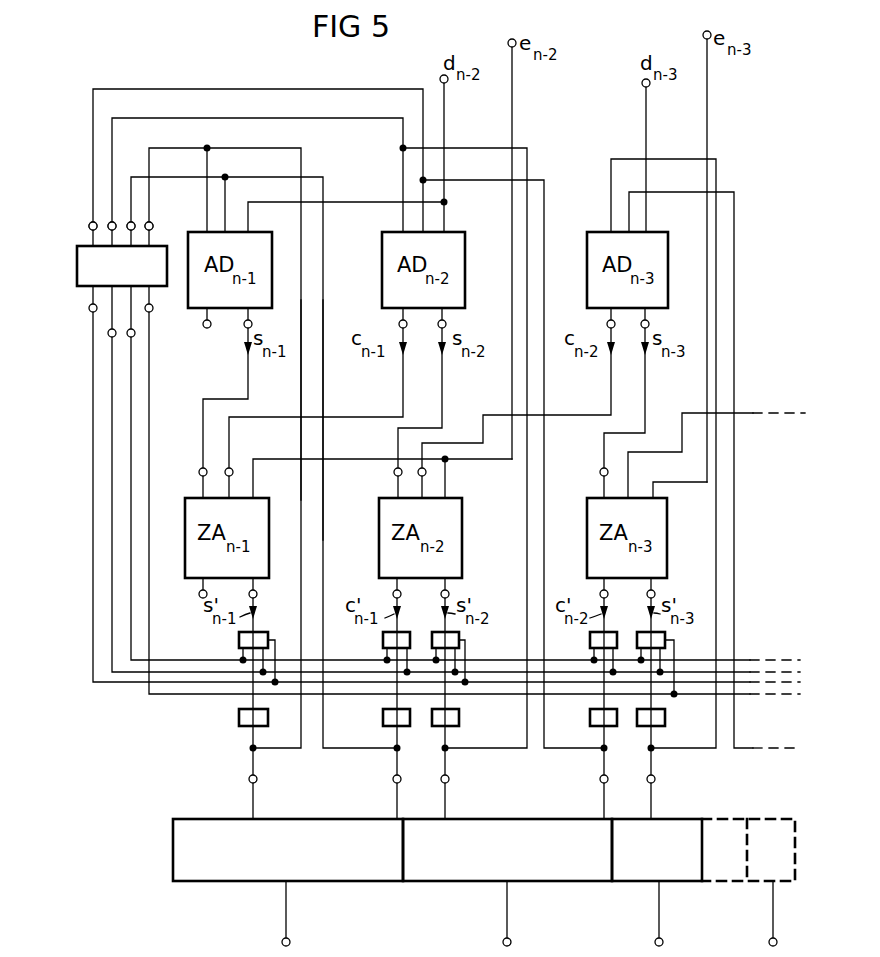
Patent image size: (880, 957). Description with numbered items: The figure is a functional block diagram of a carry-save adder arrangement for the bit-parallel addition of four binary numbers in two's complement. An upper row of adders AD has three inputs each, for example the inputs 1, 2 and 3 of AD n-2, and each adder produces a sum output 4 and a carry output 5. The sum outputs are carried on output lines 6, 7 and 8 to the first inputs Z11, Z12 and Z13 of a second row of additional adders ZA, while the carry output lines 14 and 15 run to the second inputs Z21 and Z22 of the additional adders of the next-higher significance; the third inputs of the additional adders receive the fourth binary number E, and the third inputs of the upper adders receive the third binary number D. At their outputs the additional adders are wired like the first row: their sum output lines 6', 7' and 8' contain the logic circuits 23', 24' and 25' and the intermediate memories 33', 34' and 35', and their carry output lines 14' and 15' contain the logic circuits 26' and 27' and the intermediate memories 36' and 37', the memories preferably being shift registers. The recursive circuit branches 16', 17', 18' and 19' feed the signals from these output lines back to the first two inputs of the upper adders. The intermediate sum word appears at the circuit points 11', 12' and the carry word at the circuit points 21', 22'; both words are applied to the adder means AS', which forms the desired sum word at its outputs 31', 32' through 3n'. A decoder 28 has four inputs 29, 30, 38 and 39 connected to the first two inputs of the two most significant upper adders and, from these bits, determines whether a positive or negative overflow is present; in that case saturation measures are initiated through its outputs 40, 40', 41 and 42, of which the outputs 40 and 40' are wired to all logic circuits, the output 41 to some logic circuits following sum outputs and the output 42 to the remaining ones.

The decoder 28 is at (122, 266).
The decoder input 38 is at (110, 224).
The decoder input 39 is at (90, 226).
The decoder input 30 is at (133, 224).
The decoder input 29 is at (152, 226).
The decoder output 42 is at (90, 308).
The decoder output 40' is at (88, 338).
The decoder output 41 is at (151, 311).
The decoder output 40 is at (155, 348).
The adder input 1 is at (396, 150).
The adder input 2 is at (416, 182).
The adder input 3 is at (451, 204).
The sum output 4 is at (436, 325).
The carry output 5 is at (396, 325).
The output line 6 is at (238, 403).
The output line 7 is at (435, 403).
The output line 8 is at (636, 403).
The output line 14 is at (318, 403).
The output line 15 is at (518, 403).
The first input Z11 is at (188, 473).
The second input Z21 is at (231, 469).
The first input Z12 is at (395, 472).
The second input Z22 is at (426, 474).
The first input Z13 is at (588, 473).
The recursive circuit branch 16' is at (284, 401).
The recursive circuit branch 17' is at (343, 420).
The recursive circuit branch 18' is at (465, 448).
The recursive circuit branch 19' is at (513, 464).
The output line 6' is at (269, 698).
The output line 7' is at (434, 698).
The output line 8' is at (640, 698).
The output line 14' is at (378, 698).
The output line 15' is at (579, 698).
The logic circuit 23' is at (237, 659).
The logic circuit 24' is at (470, 659).
The logic circuit 25' is at (675, 665).
The logic circuit 26' is at (378, 654).
The logic circuit 27' is at (584, 654).
The intermediate memory 33' is at (450, 832).
The intermediate memory 34' is at (468, 728).
The intermediate memory 35' is at (671, 728).
The intermediate memory 36' is at (377, 726).
The intermediate memory 37' is at (586, 726).
The circuit point 11' is at (240, 781).
The circuit point 12' is at (464, 781).
The circuit point 21' is at (384, 781).
The circuit point 22' is at (589, 781).
The adder means AS' is at (484, 881).
The output 31' is at (306, 918).
The output 32' is at (527, 918).
The output 3n' is at (756, 918).